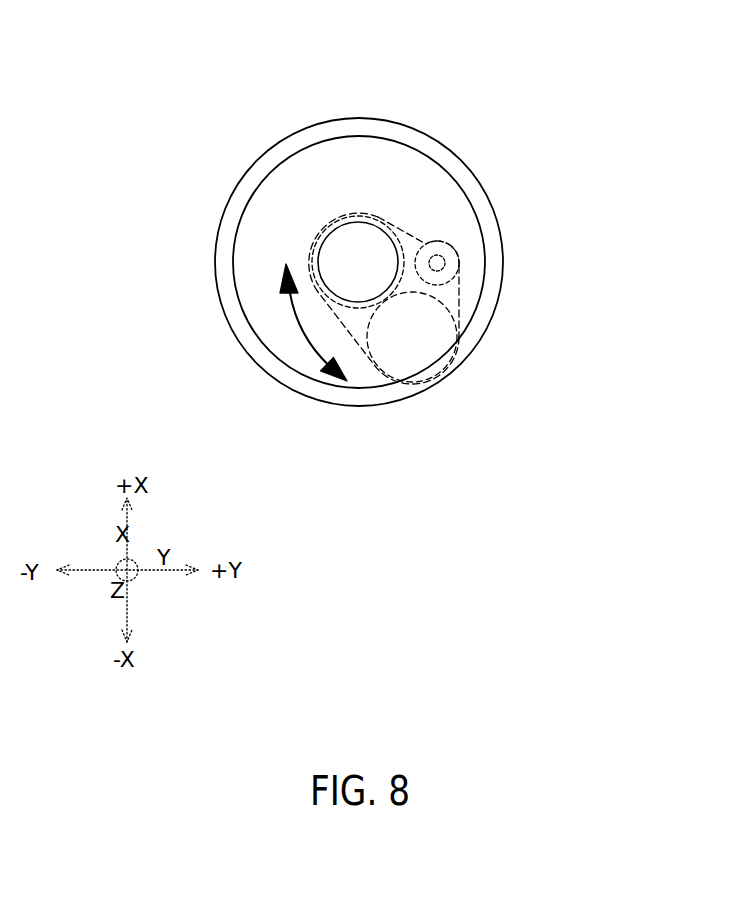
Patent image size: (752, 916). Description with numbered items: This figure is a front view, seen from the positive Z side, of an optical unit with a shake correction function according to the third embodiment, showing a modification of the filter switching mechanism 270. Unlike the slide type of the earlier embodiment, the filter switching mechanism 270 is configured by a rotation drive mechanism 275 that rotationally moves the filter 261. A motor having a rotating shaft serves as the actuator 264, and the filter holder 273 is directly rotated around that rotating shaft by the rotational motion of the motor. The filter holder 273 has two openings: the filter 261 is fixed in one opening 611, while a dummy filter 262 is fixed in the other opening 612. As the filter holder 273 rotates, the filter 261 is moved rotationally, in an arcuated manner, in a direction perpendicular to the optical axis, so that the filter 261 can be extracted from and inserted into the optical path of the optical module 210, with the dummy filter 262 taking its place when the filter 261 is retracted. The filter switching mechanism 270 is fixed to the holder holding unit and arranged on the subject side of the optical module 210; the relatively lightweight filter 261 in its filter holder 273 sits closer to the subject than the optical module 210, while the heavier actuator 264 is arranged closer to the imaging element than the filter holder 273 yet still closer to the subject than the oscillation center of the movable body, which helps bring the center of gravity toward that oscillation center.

The filter switching mechanism 270 is at (277, 130).
The optical module 210 is at (375, 242).
The filter 261 is at (318, 243).
The opening 611 is at (318, 258).
The filter holder 273 is at (412, 233).
The actuator 264 is at (448, 243).
The rotation drive mechanism 275 is at (457, 298).
The opening 612 is at (440, 312).
The dummy filter 262 is at (400, 379).